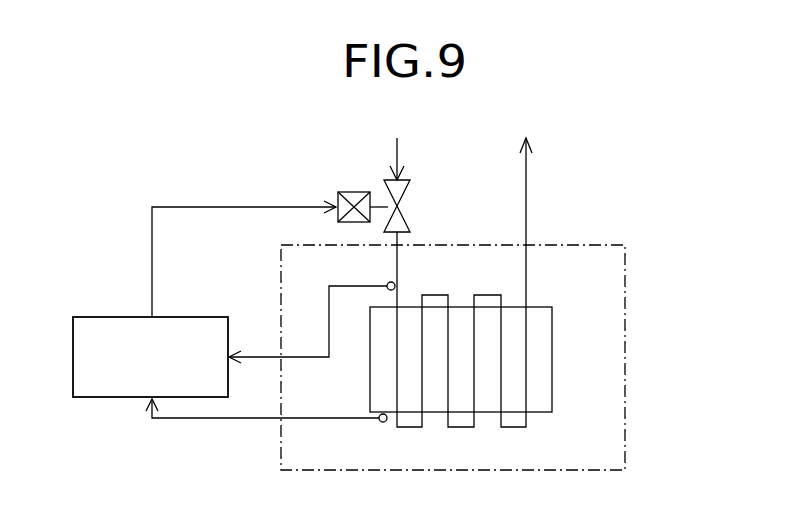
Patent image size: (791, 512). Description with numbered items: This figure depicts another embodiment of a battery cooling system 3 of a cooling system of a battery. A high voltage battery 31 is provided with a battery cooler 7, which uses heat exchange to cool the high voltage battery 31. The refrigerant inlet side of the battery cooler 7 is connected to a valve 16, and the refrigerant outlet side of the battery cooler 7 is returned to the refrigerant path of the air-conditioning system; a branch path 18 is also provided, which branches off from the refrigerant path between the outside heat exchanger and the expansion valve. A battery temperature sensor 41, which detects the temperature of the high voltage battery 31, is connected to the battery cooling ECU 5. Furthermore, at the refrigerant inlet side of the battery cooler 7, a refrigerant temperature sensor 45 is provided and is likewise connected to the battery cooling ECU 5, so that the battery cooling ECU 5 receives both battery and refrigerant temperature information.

The battery cooling system 3 is at (625, 270).
The battery cooling ECU 5 is at (125, 317).
The battery cooler 7 is at (526, 358).
The valve 16 is at (350, 192).
The branch path 18 is at (527, 203).
The high voltage battery 31 is at (552, 327).
The battery temperature sensor 41 is at (379, 423).
The refrigerant temperature sensor 45 is at (387, 285).